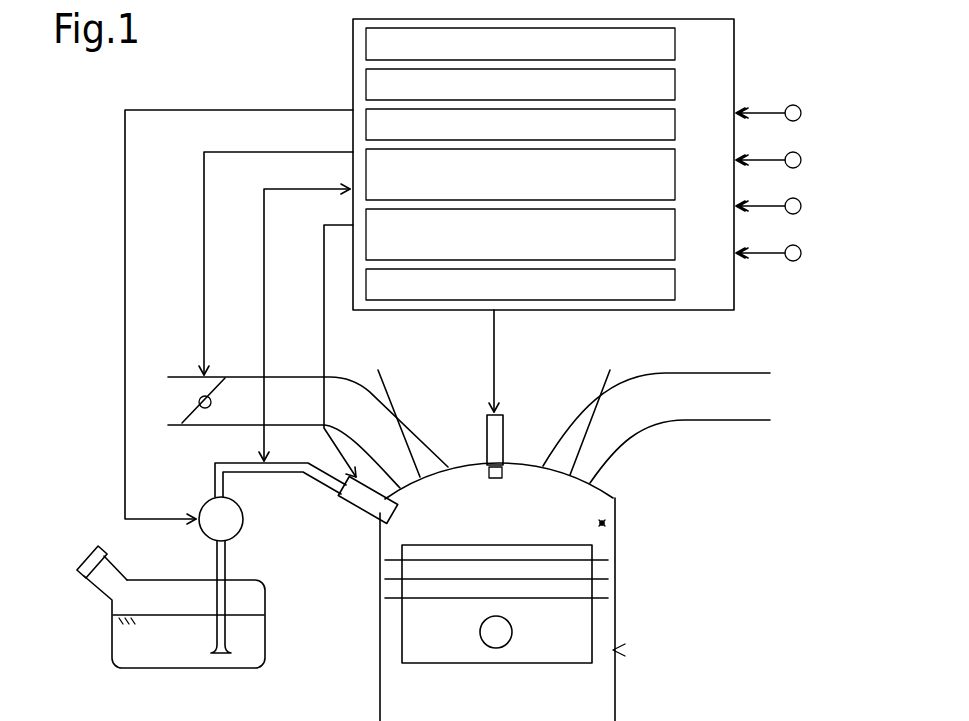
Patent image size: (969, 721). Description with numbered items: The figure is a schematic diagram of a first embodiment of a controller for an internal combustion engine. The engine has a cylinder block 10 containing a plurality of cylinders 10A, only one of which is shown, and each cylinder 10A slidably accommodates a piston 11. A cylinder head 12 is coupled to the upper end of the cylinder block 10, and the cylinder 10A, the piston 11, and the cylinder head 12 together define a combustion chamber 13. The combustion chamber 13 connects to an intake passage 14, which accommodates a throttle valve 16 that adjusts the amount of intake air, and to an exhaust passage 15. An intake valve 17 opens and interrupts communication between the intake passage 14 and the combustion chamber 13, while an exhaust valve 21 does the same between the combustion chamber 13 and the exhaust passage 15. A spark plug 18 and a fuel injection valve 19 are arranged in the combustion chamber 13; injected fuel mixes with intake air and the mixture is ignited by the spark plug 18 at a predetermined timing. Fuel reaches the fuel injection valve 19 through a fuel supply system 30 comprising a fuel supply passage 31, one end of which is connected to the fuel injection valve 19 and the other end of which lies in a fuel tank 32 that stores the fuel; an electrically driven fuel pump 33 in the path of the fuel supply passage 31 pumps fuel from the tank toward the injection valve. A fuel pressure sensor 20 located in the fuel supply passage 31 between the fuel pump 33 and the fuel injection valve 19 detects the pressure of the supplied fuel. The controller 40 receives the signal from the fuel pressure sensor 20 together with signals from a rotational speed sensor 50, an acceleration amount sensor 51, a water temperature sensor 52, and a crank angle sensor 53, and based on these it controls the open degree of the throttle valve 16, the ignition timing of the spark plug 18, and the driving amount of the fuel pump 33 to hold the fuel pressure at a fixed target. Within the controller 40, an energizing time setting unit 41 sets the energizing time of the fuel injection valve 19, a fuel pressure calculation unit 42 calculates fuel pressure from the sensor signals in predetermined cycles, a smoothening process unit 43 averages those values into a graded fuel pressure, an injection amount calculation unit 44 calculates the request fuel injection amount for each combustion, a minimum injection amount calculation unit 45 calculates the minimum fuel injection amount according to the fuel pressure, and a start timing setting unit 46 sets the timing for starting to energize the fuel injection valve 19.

The cylinder block 10 is at (616, 688).
The cylinder 10A is at (616, 650).
The piston 11 is at (478, 665).
The cylinder head 12 is at (612, 487).
The combustion chamber 13 is at (606, 523).
The intake passage 14 is at (430, 423).
The exhaust passage 15 is at (570, 420).
The throttle valve 16 is at (230, 387).
The intake valve 17 is at (378, 370).
The spark plug 18 is at (495, 480).
The fuel injection valve 19 is at (358, 505).
The fuel pressure sensor 20 is at (272, 463).
The exhaust valve 21 is at (610, 370).
The fuel supply system 30 is at (90, 630).
The fuel supply passage 31 is at (290, 475).
The fuel tank 32 is at (267, 635).
The fuel pump 33 is at (240, 533).
The controller 40 is at (736, 70).
The energizing time setting unit 41 is at (676, 45).
The fuel pressure calculation unit 42 is at (676, 84).
The smoothening process unit 43 is at (676, 125).
The injection amount calculation unit 44 is at (676, 175).
The minimum injection amount calculation unit 45 is at (676, 235).
The start timing setting unit 46 is at (676, 285).
The rotational speed sensor 50 is at (801, 113).
The acceleration amount sensor 51 is at (801, 160).
The water temperature sensor 52 is at (801, 206).
The crank angle sensor 53 is at (801, 253).